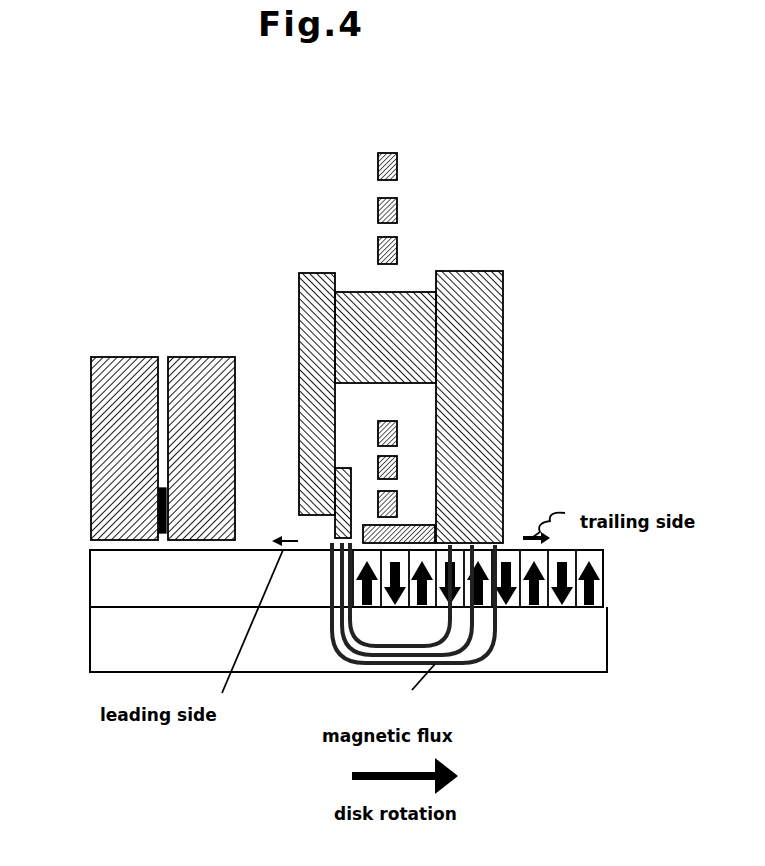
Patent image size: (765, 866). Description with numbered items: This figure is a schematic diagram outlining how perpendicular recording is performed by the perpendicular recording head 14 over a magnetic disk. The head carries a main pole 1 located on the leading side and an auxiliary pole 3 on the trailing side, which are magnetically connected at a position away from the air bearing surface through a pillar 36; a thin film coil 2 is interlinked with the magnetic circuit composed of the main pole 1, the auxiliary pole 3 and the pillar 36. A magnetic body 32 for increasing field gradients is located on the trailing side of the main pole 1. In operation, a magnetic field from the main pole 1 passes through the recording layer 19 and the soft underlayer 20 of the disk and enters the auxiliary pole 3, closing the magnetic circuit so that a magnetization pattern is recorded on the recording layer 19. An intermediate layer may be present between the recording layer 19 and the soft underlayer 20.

The perpendicular recording head 14 is at (515, 121).
The main pole 1 is at (298, 425).
The thin film coil 2 is at (407, 193).
The auxiliary pole 3 is at (474, 306).
The pillar 36 is at (360, 296).
The magnetic body 32 is at (413, 525).
The recording layer 19 is at (107, 573).
The soft underlayer 20 is at (107, 637).